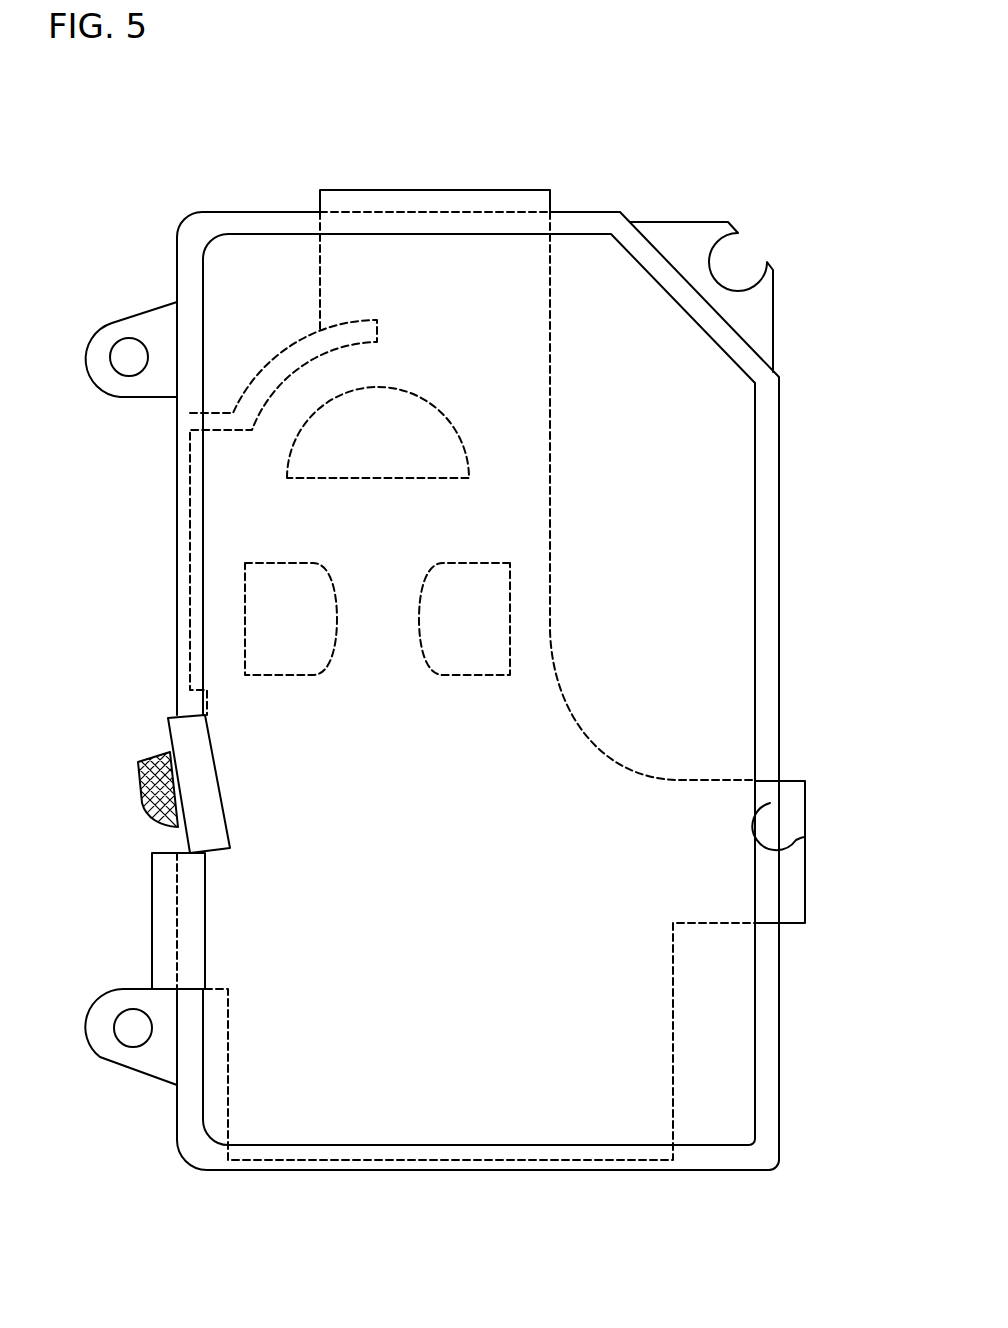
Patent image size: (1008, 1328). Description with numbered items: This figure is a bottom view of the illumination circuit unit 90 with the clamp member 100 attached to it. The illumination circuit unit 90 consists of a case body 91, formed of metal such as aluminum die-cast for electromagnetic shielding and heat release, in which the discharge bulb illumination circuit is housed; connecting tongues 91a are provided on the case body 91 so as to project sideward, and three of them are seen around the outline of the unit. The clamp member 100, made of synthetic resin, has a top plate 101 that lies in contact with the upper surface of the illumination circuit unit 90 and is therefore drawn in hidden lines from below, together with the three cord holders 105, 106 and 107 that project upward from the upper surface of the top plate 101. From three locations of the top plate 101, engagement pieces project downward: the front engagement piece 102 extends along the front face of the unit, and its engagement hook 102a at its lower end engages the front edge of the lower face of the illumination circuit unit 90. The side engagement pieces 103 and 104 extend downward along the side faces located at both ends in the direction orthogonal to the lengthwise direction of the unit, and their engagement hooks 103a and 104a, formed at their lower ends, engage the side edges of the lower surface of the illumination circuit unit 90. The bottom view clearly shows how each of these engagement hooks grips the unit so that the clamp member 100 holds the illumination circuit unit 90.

The illumination circuit unit 90 is at (779, 565).
The case body 91 is at (733, 427).
The connecting tongues 91a is at (113, 323).
The clamp member 100 is at (393, 608).
The top plate 101 is at (550, 513).
The front engagement piece 102 is at (479, 171).
The engagement hook 102a is at (473, 237).
The side engagement piece 103 is at (812, 859).
The engagement hook 103a is at (805, 837).
The side engagement piece 104 is at (199, 852).
The engagement hook 104a is at (205, 925).
The cord holder 105 is at (458, 427).
The cord holder 106 is at (246, 611).
The cord holder 107 is at (510, 613).